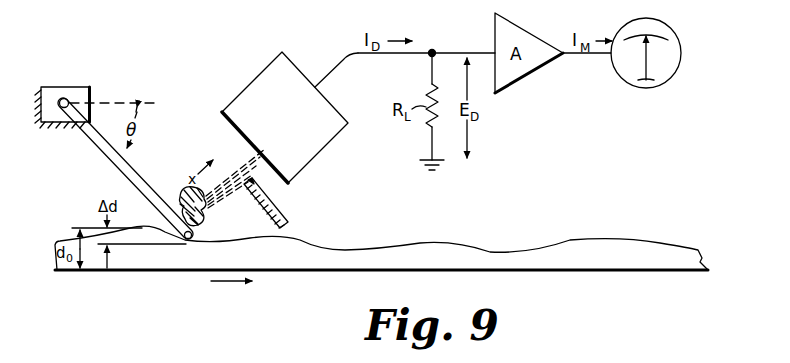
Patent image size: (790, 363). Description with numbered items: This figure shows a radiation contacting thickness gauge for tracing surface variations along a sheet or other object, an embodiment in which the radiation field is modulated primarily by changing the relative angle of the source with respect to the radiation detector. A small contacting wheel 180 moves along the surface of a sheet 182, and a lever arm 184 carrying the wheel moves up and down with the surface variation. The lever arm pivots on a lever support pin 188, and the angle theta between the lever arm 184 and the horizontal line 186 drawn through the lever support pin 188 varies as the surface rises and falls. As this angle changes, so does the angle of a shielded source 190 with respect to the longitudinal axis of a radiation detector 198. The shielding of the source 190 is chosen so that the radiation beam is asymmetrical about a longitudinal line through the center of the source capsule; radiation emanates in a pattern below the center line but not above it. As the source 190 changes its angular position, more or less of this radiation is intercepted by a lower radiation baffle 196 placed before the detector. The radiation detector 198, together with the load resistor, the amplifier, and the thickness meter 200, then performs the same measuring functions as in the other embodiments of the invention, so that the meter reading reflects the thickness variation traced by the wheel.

The contacting wheel 180 is at (197, 239).
The sheet 182 is at (404, 243).
The lever arm 184 is at (113, 165).
The horizontal line 186 is at (112, 101).
The lever support pin 188 is at (64, 87).
The shielded source 190 is at (205, 214).
The lower radiation baffle 196 is at (281, 213).
The radiation detector 198 is at (295, 132).
The thickness meter 200 is at (667, 81).